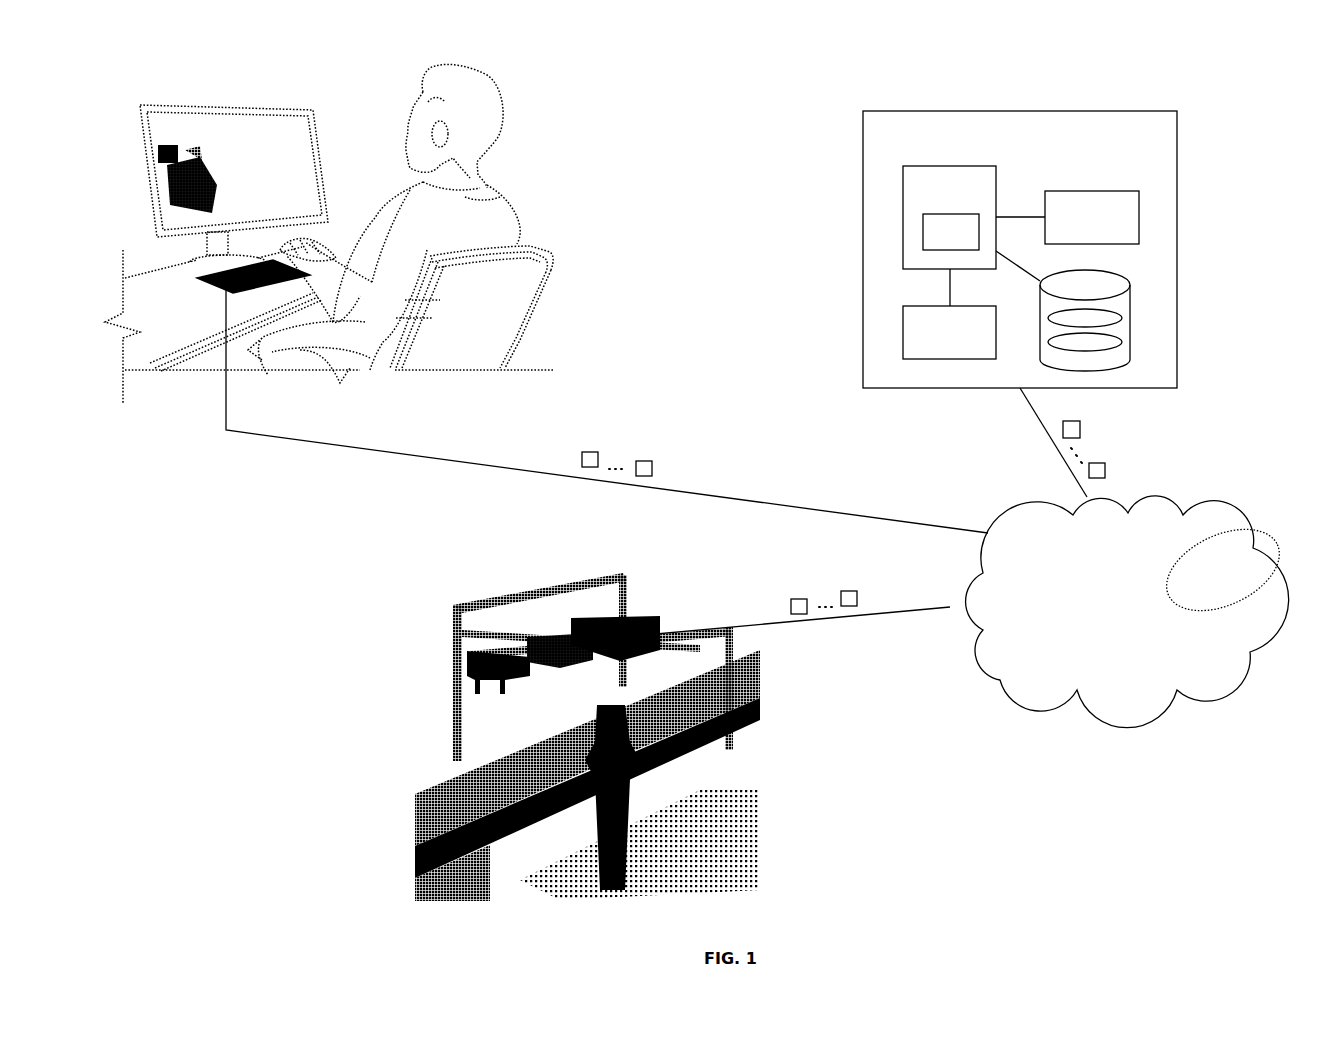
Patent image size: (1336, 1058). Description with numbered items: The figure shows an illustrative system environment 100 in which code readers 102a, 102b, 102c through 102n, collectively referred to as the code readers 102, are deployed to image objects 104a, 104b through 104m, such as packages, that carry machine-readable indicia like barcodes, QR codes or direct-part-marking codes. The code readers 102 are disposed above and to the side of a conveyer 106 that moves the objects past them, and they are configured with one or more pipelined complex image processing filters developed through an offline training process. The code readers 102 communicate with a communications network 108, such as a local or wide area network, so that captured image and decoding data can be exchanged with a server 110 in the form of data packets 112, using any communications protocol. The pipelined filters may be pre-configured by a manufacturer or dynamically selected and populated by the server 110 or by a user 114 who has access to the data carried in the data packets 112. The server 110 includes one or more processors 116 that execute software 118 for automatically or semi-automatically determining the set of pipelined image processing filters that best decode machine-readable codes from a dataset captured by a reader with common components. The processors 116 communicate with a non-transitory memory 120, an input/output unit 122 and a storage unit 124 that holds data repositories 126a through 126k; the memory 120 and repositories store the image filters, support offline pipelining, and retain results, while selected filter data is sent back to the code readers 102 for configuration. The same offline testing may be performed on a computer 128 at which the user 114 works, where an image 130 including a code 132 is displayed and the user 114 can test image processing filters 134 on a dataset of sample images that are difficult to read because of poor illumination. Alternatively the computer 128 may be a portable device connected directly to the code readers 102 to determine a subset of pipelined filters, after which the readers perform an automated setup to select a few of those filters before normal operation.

The system environment 100 is at (721, 91).
The code readers 102 is at (571, 708).
The code reader 102a is at (486, 674).
The code reader 102b is at (530, 646).
The code reader 102c is at (654, 750).
The code reader 102n is at (634, 624).
The object 104a is at (416, 807).
The object 104b is at (503, 766).
The object 104m is at (760, 666).
The conveyer 106 is at (423, 844).
The communications network 108 is at (1147, 639).
The server 110 is at (1151, 142).
The data packets 112 is at (1105, 468).
The user 114 is at (490, 188).
The processors 116 is at (906, 206).
The software 118 is at (923, 232).
The memory 120 is at (903, 337).
The input/output unit 122 is at (1139, 217).
The storage unit 124 is at (1130, 300).
The data repository 126a is at (1122, 320).
The data repository 126k is at (1117, 347).
The computer 128 is at (148, 91).
The image 130 is at (198, 136).
The code 132 is at (199, 162).
The image processing filters 134 is at (278, 139).